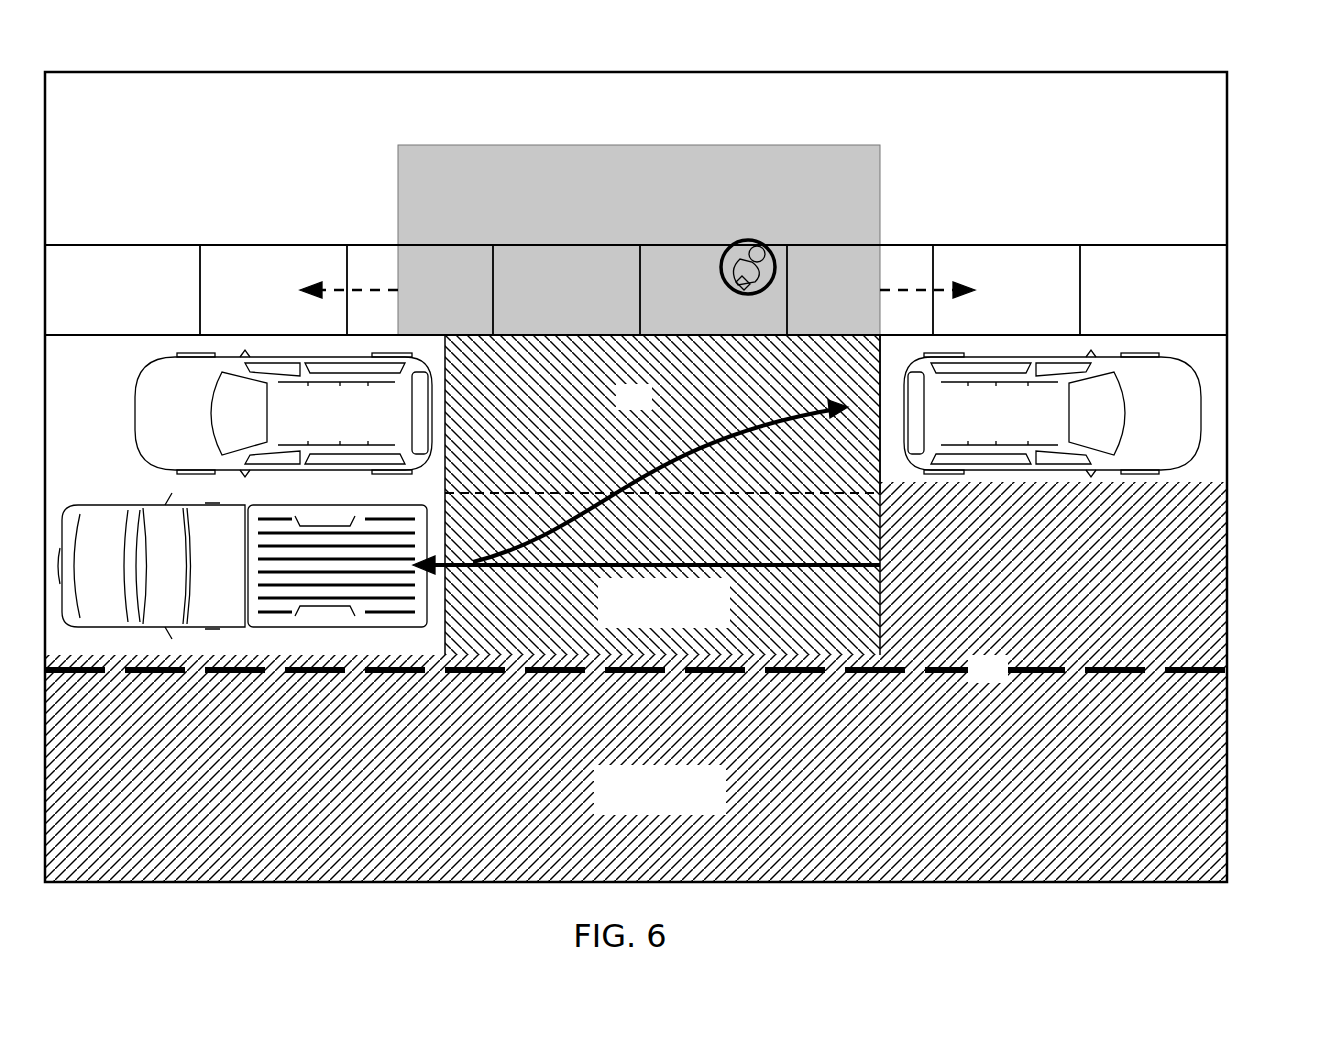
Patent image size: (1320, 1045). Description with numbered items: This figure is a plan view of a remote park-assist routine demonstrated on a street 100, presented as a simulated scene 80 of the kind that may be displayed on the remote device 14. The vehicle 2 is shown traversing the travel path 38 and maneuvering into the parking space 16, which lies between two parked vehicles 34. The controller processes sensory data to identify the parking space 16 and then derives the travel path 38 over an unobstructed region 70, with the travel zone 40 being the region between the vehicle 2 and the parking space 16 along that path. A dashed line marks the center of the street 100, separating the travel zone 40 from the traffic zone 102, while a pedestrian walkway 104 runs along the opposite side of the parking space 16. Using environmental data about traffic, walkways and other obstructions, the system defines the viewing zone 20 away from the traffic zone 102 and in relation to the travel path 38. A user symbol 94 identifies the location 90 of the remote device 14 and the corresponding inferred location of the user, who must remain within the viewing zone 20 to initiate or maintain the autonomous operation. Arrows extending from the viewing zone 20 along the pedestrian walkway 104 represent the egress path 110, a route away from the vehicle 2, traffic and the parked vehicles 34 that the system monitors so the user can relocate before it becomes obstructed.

The vehicle (truck) 2 is at (209, 574).
The remote device 14 is at (773, 283).
The parking space 16 is at (882, 357).
The viewing zone 20 is at (656, 232).
The parked vehicles 34 is at (347, 418).
The travel path 38 is at (690, 414).
The travel zone 40 is at (666, 628).
The unobstructed region 70 is at (1180, 708).
The simulated scene 80 is at (1110, 85).
The location 90 is at (778, 265).
The user symbol 94 is at (764, 245).
The street 100 is at (1003, 679).
The traffic zone 102 is at (666, 813).
The pedestrian walkway 104 is at (1066, 300).
The egress path 110 is at (355, 288).